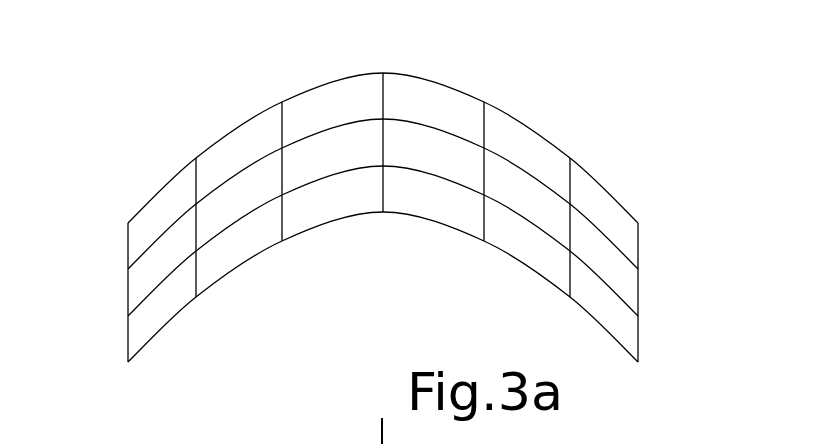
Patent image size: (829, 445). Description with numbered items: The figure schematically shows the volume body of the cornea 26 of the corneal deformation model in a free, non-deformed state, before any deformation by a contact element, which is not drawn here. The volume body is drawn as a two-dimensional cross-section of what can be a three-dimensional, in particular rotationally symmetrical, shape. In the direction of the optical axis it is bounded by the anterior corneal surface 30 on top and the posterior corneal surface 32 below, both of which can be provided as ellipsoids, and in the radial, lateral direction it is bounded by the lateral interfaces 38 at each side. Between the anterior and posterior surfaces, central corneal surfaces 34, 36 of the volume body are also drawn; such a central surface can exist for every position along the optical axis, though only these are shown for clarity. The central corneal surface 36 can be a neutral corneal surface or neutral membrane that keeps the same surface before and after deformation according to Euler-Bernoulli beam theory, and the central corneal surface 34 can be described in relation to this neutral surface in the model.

The cornea 26 is at (210, 106).
The anterior corneal surface 30 is at (465, 95).
The posterior corneal surface 32 is at (537, 275).
The central corneal surface 34 is at (530, 177).
The central corneal surface 36 is at (613, 290).
The lateral interfaces 38 is at (127, 288).